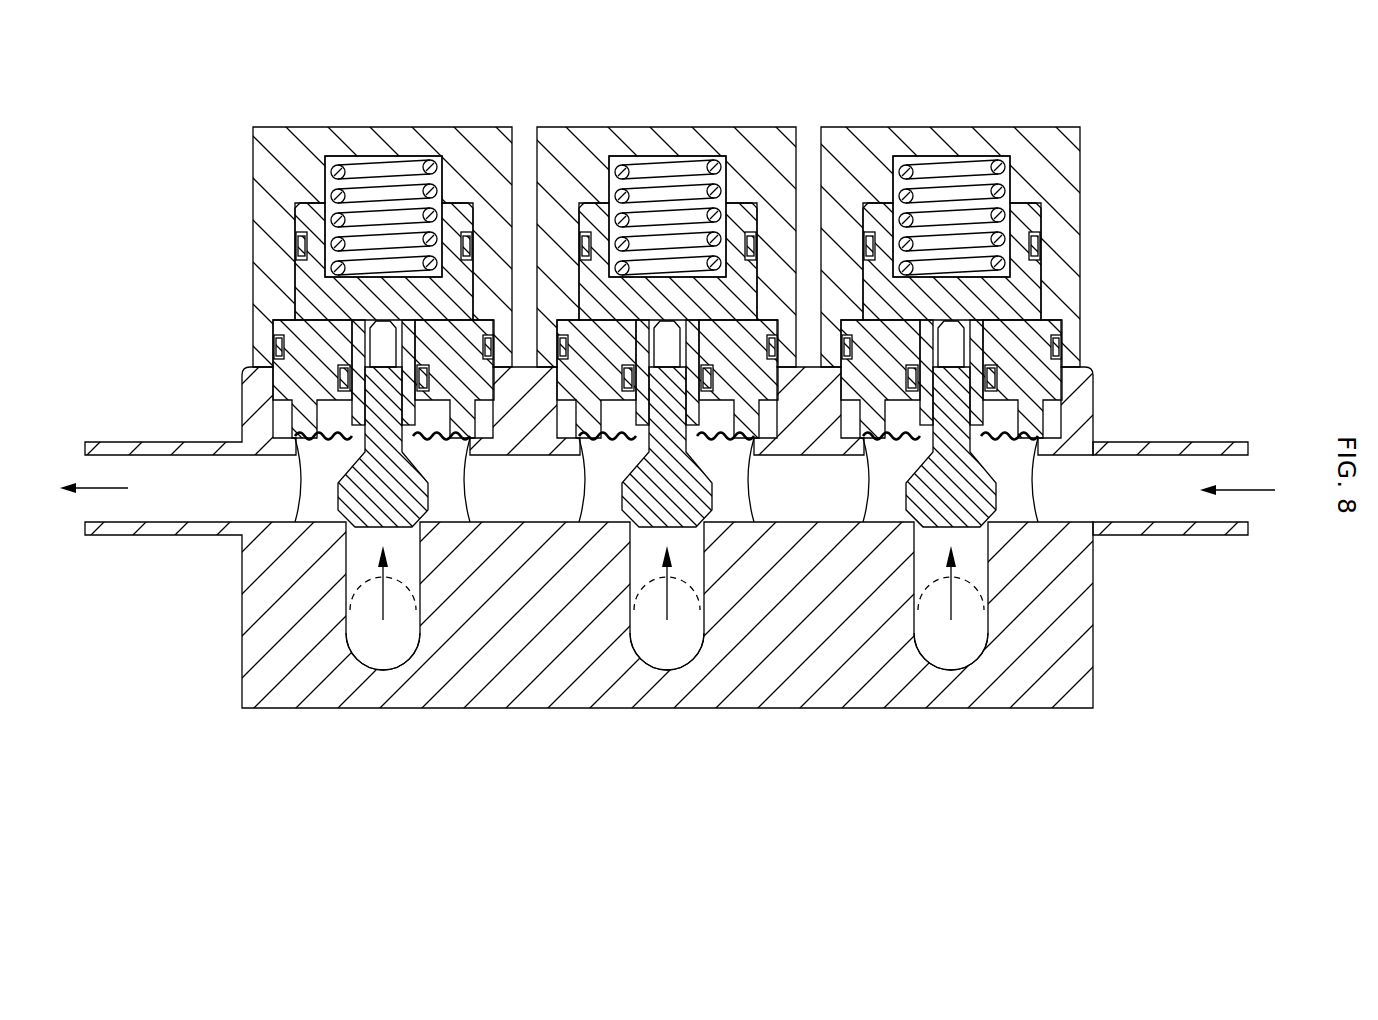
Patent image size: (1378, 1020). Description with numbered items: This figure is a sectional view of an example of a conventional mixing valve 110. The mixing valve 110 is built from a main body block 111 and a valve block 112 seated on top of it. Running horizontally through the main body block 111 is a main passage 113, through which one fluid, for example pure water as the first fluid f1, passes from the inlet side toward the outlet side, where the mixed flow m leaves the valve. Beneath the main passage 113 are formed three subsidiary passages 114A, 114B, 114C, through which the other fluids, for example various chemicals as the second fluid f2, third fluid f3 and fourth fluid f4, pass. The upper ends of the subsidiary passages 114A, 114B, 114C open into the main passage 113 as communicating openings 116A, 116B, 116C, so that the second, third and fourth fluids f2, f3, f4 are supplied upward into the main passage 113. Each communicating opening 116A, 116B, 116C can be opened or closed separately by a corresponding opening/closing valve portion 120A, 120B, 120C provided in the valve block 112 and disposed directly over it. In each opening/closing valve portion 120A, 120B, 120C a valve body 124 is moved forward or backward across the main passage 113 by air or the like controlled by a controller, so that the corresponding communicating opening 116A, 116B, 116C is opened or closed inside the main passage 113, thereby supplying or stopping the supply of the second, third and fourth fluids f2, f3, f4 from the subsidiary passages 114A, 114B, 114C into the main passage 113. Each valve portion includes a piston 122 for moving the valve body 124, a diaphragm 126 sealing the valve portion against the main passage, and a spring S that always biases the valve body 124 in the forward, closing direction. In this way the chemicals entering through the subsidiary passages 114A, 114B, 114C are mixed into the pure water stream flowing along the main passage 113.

The mixing valve 110 is at (1106, 202).
The main body block 111 is at (250, 643).
The valve block 112 is at (280, 135).
The main passage 113 is at (1162, 493).
The subsidiary passage 114A is at (946, 647).
The subsidiary passage 114B is at (660, 650).
The subsidiary passage 114C is at (373, 647).
The communicating opening 116A is at (957, 533).
The communicating opening 116B is at (625, 538).
The communicating opening 116C is at (347, 545).
The opening/closing valve portion 120A is at (1002, 474).
The opening/closing valve portion 120B is at (618, 496).
The opening/closing valve portion 120C is at (343, 463).
The piston 122 is at (453, 217).
The valve body 124 is at (347, 495).
The diaphragm 126 is at (1008, 405).
The spring S is at (372, 167).
The outlet flow m is at (103, 487).
The first fluid f1 is at (1262, 490).
The second fluid f2 is at (953, 613).
The third fluid f3 is at (669, 613).
The fourth fluid f4 is at (385, 613).